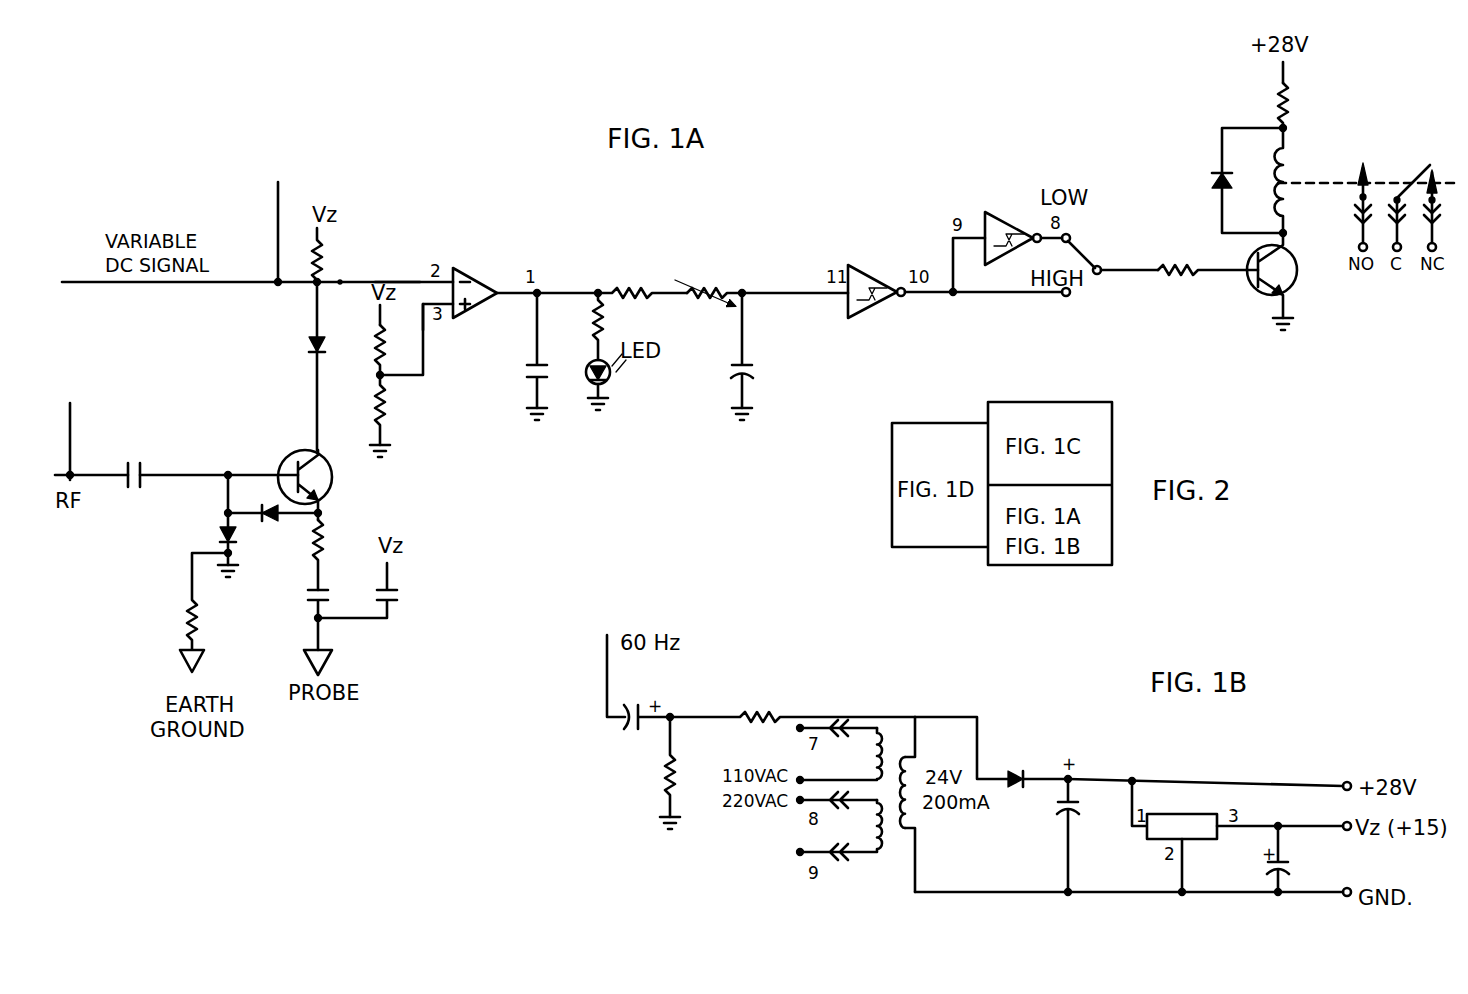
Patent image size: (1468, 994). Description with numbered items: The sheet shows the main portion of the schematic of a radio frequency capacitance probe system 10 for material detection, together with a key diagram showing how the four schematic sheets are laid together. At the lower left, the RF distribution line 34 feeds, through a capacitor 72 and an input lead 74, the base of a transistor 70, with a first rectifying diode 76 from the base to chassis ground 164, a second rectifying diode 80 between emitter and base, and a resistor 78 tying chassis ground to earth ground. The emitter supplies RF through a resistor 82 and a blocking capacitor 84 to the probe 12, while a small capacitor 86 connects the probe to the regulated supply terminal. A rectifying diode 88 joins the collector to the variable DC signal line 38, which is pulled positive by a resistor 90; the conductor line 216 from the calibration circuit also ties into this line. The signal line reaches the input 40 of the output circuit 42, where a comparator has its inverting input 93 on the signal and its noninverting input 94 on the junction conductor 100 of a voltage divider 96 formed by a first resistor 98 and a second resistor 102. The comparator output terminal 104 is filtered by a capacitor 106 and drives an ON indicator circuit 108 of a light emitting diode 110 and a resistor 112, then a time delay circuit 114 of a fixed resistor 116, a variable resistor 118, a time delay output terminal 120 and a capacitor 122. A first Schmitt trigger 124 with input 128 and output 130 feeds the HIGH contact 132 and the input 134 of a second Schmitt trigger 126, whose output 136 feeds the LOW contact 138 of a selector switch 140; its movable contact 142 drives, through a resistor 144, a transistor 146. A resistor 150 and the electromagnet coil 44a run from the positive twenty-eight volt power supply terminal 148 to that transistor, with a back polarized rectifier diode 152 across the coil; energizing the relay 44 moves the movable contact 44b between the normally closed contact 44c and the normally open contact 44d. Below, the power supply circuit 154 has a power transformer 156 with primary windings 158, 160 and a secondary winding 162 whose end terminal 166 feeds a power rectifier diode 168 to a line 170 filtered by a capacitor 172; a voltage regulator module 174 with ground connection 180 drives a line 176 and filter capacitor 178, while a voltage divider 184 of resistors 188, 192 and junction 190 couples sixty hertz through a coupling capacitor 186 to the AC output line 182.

In FIG. 1A, the system 10 is at (180, 168).
In FIG. 1A, the RF probe 12 is at (304, 664).
In FIG. 1A, the RF distribution line 34 is at (90, 440).
In FIG. 1A, the variable DC signal line 38 is at (312, 303).
In FIG. 1A, the input 40 is at (345, 265).
In FIG. 1A, the output circuit 42 is at (505, 222).
In FIG. 1A, the electromagnetic relay 44 is at (1338, 114).
In FIG. 1A, the electromagnet coil 44a is at (1278, 160).
In FIG. 1A, the movable contact 44b is at (1420, 168).
In FIG. 1A, the normally closed fixed contact 44c is at (1425, 200).
In FIG. 1A, the normally open fixed contact 44d is at (1355, 185).
In FIG. 1A, the transistor 70 is at (333, 478).
In FIG. 1A, the capacitor 72 is at (131, 490).
In FIG. 1A, the input lead 74 is at (145, 470).
In FIG. 1A, the first rectifying diode 76 is at (222, 530).
In FIG. 1A, the resistor 78 is at (186, 612).
In FIG. 1A, the second rectifying diode 80 is at (268, 521).
In FIG. 1A, the resistor 82 is at (326, 542).
In FIG. 1A, the blocking capacitor 84 is at (306, 594).
In FIG. 1A, the capacitor 86 is at (398, 598).
In FIG. 1A, the rectifying diode 88 is at (308, 345).
In FIG. 1A, the resistor 90 is at (325, 250).
In FIG. 1A, the inverting input 93 is at (395, 282).
In FIG. 1A, the noninverting input 94 is at (445, 318).
In FIG. 1A, the voltage divider 96 is at (368, 345).
In FIG. 1A, the first resistor 98 is at (374, 352).
In FIG. 1A, the junction conductor 100 is at (376, 378).
In FIG. 1A, the second resistor 102 is at (376, 408).
In FIG. 1A, the output terminal 104 is at (517, 296).
In FIG. 1A, the filtering capacitor 106 is at (527, 375).
In FIG. 1A, the ON indicator circuit 108 is at (580, 412).
In FIG. 1A, the light emitting diode 110 is at (620, 385).
In FIG. 1A, the resistor 112 is at (590, 330).
In FIG. 1A, the time delay circuit 114 is at (703, 282).
In FIG. 1A, the fixed resistor 116 is at (622, 298).
In FIG. 1A, the variable resistor 118 is at (692, 300).
In FIG. 1A, the time delay output terminal 120 is at (743, 285).
In FIG. 1A, the capacitor 122 is at (735, 378).
In FIG. 1A, the first Schmitt trigger 124 is at (856, 315).
In FIG. 1A, the second Schmitt trigger 126 is at (1010, 255).
In FIG. 1A, the input 128 is at (812, 296).
In FIG. 1A, the output 130 is at (918, 296).
In FIG. 1A, the selector switch contact 132 is at (1064, 298).
In FIG. 1A, the input 134 is at (968, 232).
In FIG. 1A, the output 136 is at (1040, 232).
In FIG. 1A, the selector switch contact 138 is at (1072, 235).
In FIG. 1A, the selector switch 140 is at (1092, 258).
In FIG. 1A, the movable contact 142 is at (1105, 268).
In FIG. 1A, the resistor 144 is at (1162, 278).
In FIG. 1A, the transistor 146 is at (1258, 292).
In FIG. 1A, the power supply terminal 148 is at (1280, 70).
In FIG. 1A, the resistor 150 is at (1278, 100).
In FIG. 1A, the back polarized rectifier diode 152 is at (1212, 178).
In FIG. 1B, the power supply circuit 154 is at (1308, 758).
In FIG. 1B, the power transformer 156 is at (895, 858).
In FIG. 1B, the primary winding 158 is at (870, 760).
In FIG. 1B, the primary winding 160 is at (873, 818).
In FIG. 1B, the secondary winding 162 is at (910, 818).
In FIG. 1A, the chassis ground 164 is at (392, 452).
In FIG. 1B, the chassis ground 164 is at (668, 830).
In FIG. 1B, the end terminal 166 is at (918, 715).
In FIG. 1B, the power rectifier diode 168 is at (1015, 768).
In FIG. 1B, the line 170 is at (1178, 778).
In FIG. 1B, the filter capacitor 172 is at (1060, 808).
In FIG. 1B, the voltage regulator module 174 is at (1205, 812).
In FIG. 1B, the line 176 is at (1264, 822).
In FIG. 1B, the filter capacitor 178 is at (1265, 866).
In FIG. 1B, the connection 180 is at (1178, 862).
In FIG. 1B, the AC output line 182 is at (605, 675).
In FIG. 1B, the voltage divider 184 is at (648, 812).
In FIG. 1B, the coupling capacitor 186 is at (630, 732).
In FIG. 1B, the resistor 188 is at (760, 710).
In FIG. 1B, the junction 190 is at (672, 712).
In FIG. 1B, the resistor 192 is at (663, 782).
In FIG. 1A, the conductor line 216 is at (276, 215).